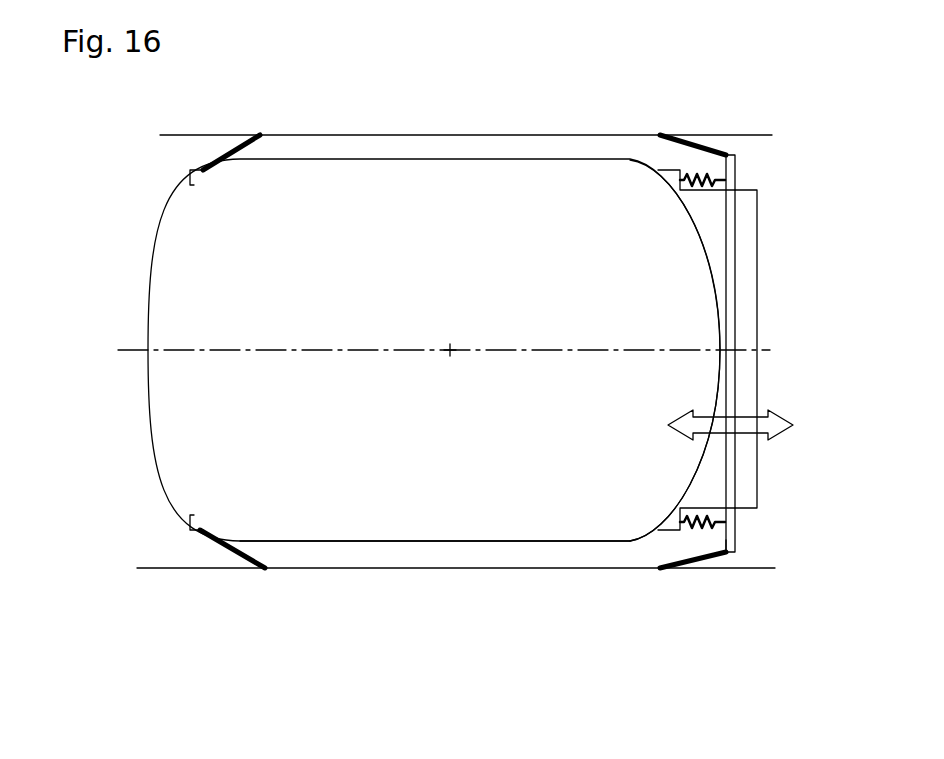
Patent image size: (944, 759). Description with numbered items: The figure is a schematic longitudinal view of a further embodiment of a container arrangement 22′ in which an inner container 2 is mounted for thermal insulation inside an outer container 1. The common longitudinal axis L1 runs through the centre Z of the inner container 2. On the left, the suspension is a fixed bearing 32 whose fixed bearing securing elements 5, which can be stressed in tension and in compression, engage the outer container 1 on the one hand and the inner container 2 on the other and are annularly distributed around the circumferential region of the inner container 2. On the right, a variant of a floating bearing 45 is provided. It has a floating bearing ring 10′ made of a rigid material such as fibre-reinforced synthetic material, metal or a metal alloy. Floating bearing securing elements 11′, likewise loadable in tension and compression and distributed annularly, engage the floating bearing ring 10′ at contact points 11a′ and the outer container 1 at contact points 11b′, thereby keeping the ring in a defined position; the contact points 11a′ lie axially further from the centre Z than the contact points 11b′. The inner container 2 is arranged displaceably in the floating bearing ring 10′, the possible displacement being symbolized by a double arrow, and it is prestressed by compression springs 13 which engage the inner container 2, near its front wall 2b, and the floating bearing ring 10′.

The outer container 1 is at (342, 135).
The inner container 2 is at (338, 160).
The front wall of the inner container 2b is at (720, 318).
The fixed bearing securing elements 5 is at (237, 543).
The floating bearing ring 10′ is at (737, 270).
The floating bearing securing elements 11′ is at (700, 140).
The contact points at the floating bearing ring 11a′ is at (740, 548).
The contact points at the outer container 11b′ is at (653, 570).
The compression springs 13 is at (688, 182).
The container arrangement 22′ is at (481, 122).
The fixed bearing 32 is at (236, 122).
The floating bearing 45 is at (664, 118).
The longitudinal axis L1 is at (290, 325).
The centre of the inner container Z is at (460, 333).